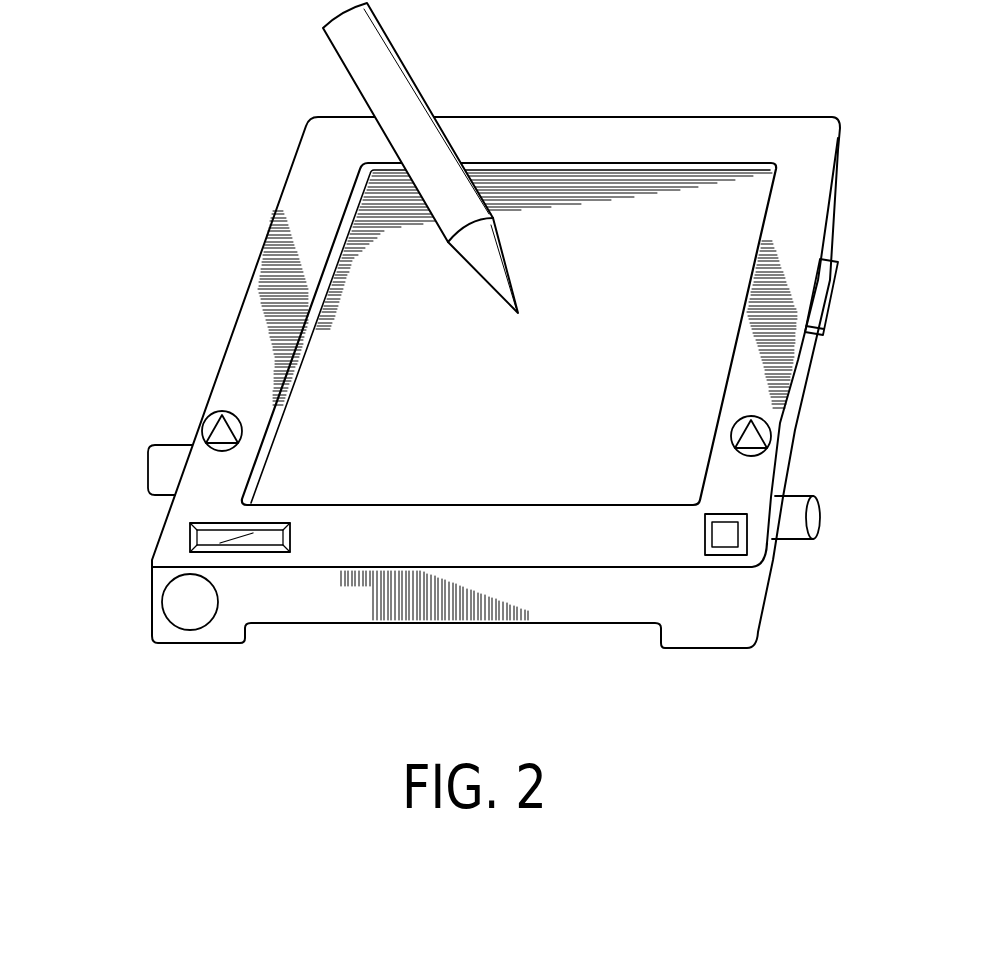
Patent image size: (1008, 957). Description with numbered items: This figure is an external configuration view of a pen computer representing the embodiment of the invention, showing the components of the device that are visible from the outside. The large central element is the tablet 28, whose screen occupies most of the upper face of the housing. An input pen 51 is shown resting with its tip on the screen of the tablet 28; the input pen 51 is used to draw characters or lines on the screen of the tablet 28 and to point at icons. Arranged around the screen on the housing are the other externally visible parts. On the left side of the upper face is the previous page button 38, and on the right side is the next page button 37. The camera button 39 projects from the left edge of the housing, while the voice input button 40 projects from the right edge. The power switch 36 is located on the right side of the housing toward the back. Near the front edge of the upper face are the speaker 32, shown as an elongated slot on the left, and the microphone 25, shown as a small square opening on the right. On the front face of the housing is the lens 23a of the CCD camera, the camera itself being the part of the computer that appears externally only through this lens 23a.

The input pen 51 is at (428, 100).
The power switch 36 is at (833, 293).
The previous page button 38 is at (205, 418).
The camera button 39 is at (148, 452).
The next page button 37 is at (771, 437).
The voice input button 40 is at (822, 518).
The speaker 32 is at (190, 542).
The microphone 25 is at (747, 535).
The lens 23a is at (168, 621).
The tablet 28 is at (475, 493).